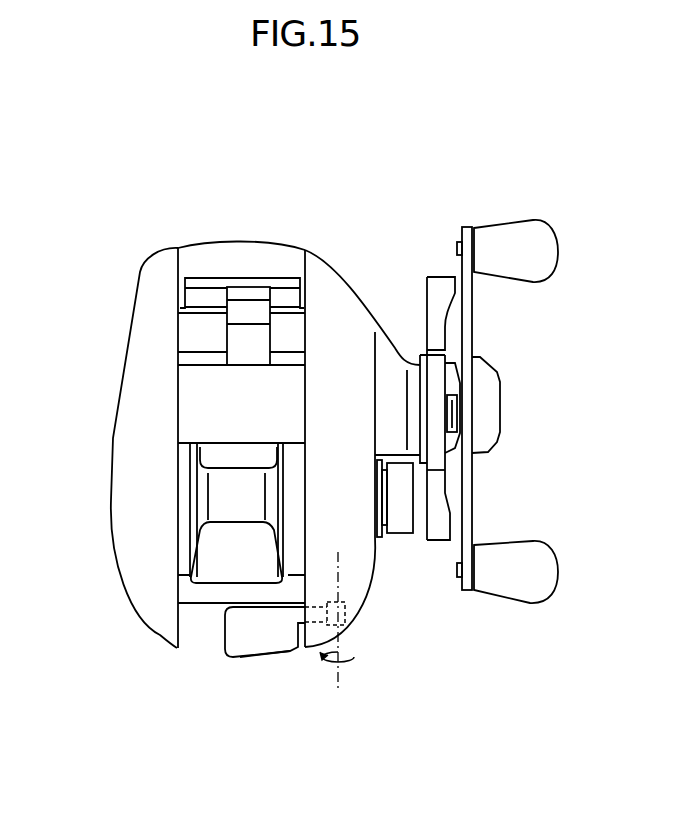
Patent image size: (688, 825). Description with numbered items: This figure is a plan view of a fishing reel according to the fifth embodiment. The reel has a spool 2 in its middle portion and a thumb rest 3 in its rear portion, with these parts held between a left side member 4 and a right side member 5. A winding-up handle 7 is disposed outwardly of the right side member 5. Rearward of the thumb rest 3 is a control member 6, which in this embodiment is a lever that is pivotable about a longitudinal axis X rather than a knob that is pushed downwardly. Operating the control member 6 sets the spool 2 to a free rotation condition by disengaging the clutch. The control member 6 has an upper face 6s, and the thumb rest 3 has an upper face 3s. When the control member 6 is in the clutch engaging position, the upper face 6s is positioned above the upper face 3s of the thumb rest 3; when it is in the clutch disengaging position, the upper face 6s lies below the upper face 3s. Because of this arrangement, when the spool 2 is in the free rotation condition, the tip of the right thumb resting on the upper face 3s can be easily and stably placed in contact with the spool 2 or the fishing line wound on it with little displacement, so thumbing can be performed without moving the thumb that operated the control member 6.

The spool 2 is at (222, 498).
The thumb rest 3 is at (203, 603).
The upper face of the thumb rest 3s is at (236, 585).
The left side member 4 is at (125, 375).
The right side member 5 is at (350, 298).
The control member 6 is at (287, 652).
The upper face of the control member 6s is at (257, 640).
The winding-up handle 7 is at (472, 495).
The longitudinal axis X is at (337, 639).